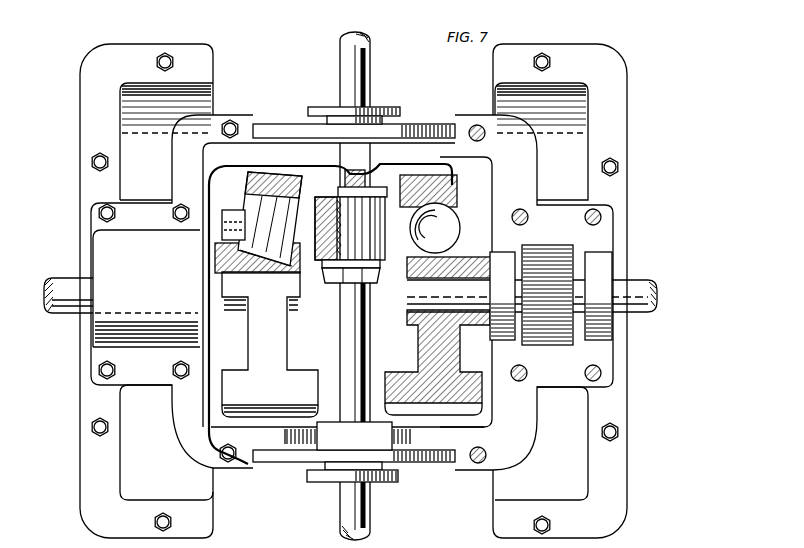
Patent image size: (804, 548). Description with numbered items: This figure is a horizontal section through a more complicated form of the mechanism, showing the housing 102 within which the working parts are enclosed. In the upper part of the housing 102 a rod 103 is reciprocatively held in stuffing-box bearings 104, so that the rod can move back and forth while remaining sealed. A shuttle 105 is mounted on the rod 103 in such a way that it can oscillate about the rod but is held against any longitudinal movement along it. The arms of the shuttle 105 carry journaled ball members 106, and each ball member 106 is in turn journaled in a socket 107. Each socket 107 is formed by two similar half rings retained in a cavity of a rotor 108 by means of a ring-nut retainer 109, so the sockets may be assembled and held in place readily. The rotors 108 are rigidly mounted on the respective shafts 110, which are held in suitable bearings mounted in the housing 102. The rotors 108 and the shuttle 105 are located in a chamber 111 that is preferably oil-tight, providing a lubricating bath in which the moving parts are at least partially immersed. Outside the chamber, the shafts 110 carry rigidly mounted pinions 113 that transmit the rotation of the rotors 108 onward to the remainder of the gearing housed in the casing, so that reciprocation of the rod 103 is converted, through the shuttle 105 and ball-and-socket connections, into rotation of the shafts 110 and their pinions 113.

The housing 102 is at (220, 432).
The rod 103 is at (368, 80).
The stuffing-box bearings 104 is at (318, 132).
The shuttle 105 is at (397, 256).
The ball members 106 is at (252, 206).
The sockets 107 is at (341, 198).
The rotors 108 is at (297, 381).
The ring-nut retainer 109 is at (249, 303).
The shafts 110 is at (74, 313).
The chamber 111 is at (275, 344).
The pinions 113 is at (545, 322).